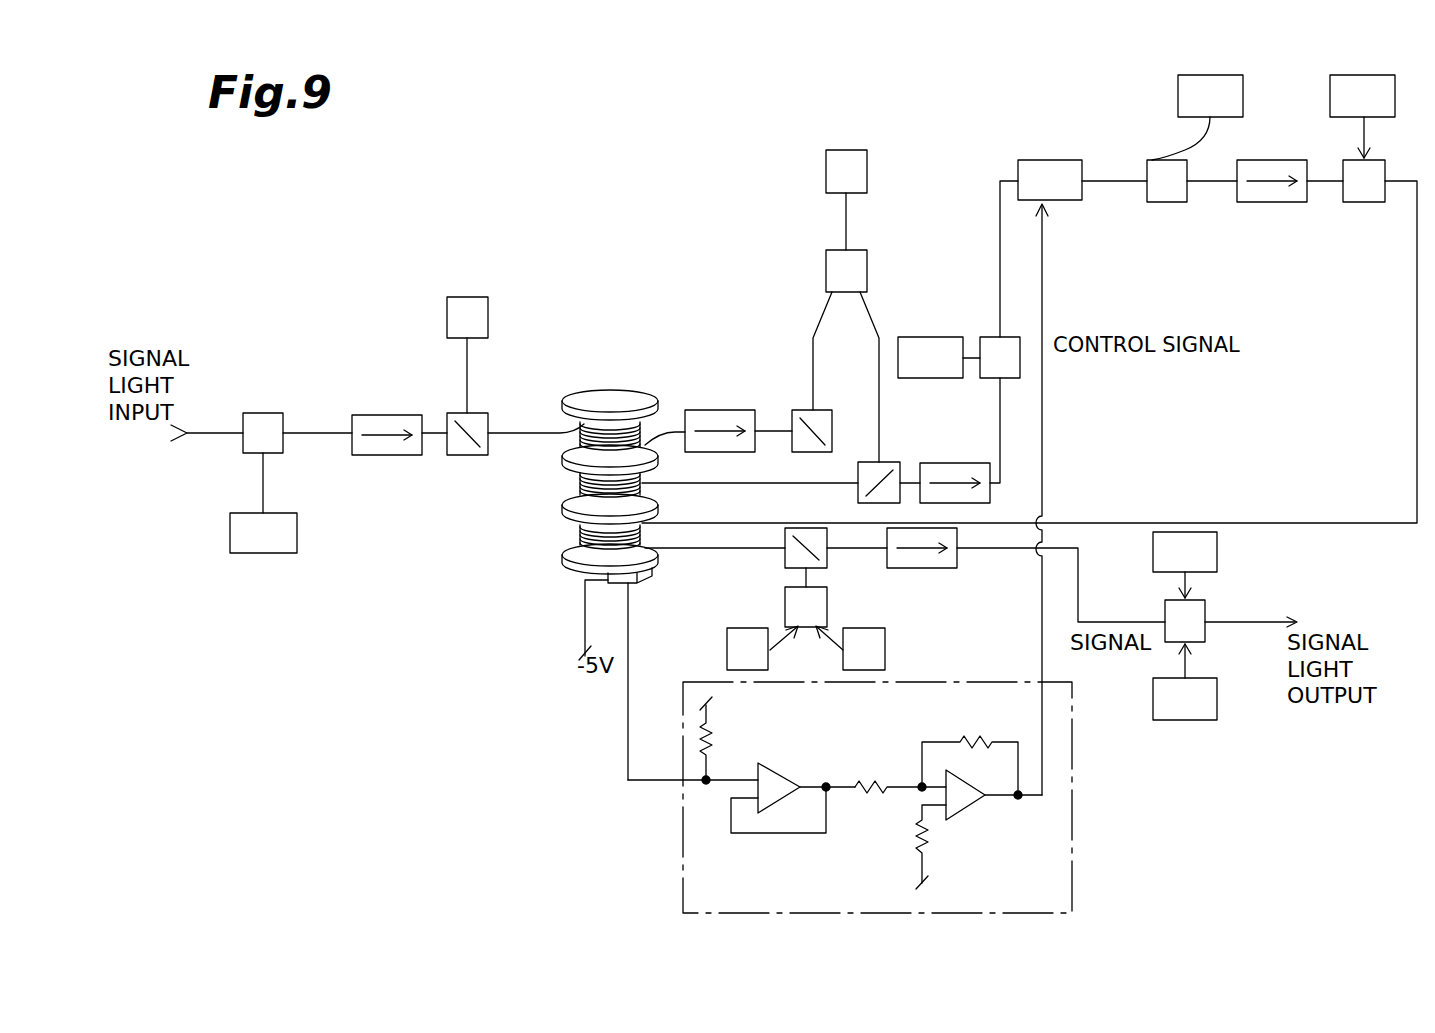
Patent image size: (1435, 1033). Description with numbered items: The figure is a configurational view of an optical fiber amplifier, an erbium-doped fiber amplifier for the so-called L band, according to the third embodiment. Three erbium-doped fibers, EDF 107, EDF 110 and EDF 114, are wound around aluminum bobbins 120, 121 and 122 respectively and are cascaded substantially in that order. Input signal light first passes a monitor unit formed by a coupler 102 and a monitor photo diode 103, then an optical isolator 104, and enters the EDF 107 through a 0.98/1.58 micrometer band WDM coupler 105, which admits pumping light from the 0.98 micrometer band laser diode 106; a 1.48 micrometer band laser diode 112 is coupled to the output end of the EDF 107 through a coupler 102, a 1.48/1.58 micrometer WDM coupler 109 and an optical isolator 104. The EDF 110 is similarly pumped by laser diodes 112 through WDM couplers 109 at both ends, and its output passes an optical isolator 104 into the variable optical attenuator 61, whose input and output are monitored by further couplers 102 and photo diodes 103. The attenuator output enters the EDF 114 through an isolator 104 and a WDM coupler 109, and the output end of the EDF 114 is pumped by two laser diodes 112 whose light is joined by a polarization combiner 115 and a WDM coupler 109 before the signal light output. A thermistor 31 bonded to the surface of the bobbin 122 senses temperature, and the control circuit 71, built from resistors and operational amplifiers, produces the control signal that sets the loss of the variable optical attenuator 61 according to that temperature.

The thermistor 31 is at (645, 585).
The variable optical attenuator 61 is at (1058, 160).
The control circuit 71 is at (1072, 855).
The coupler 102 is at (268, 413).
The monitor photo diode 103 is at (275, 553).
The optical isolator 104 is at (395, 415).
The 0.98/1.58 micrometer band WDM coupler 105 is at (473, 413).
The pumping laser diode 106 is at (480, 297).
The erbium-doped fiber 107 is at (655, 425).
The 1.48/1.58 micrometer WDM coupler 109 is at (822, 410).
The erbium-doped fiber 110 is at (578, 487).
The 1.48 micrometer band laser diode 112 is at (848, 150).
The erbium-doped fiber 114 is at (578, 534).
The polarization combiner 115 is at (806, 597).
The aluminum bobbin 120 is at (610, 384).
The aluminum bobbin 121 is at (522, 487).
The aluminum bobbin 122 is at (552, 575).